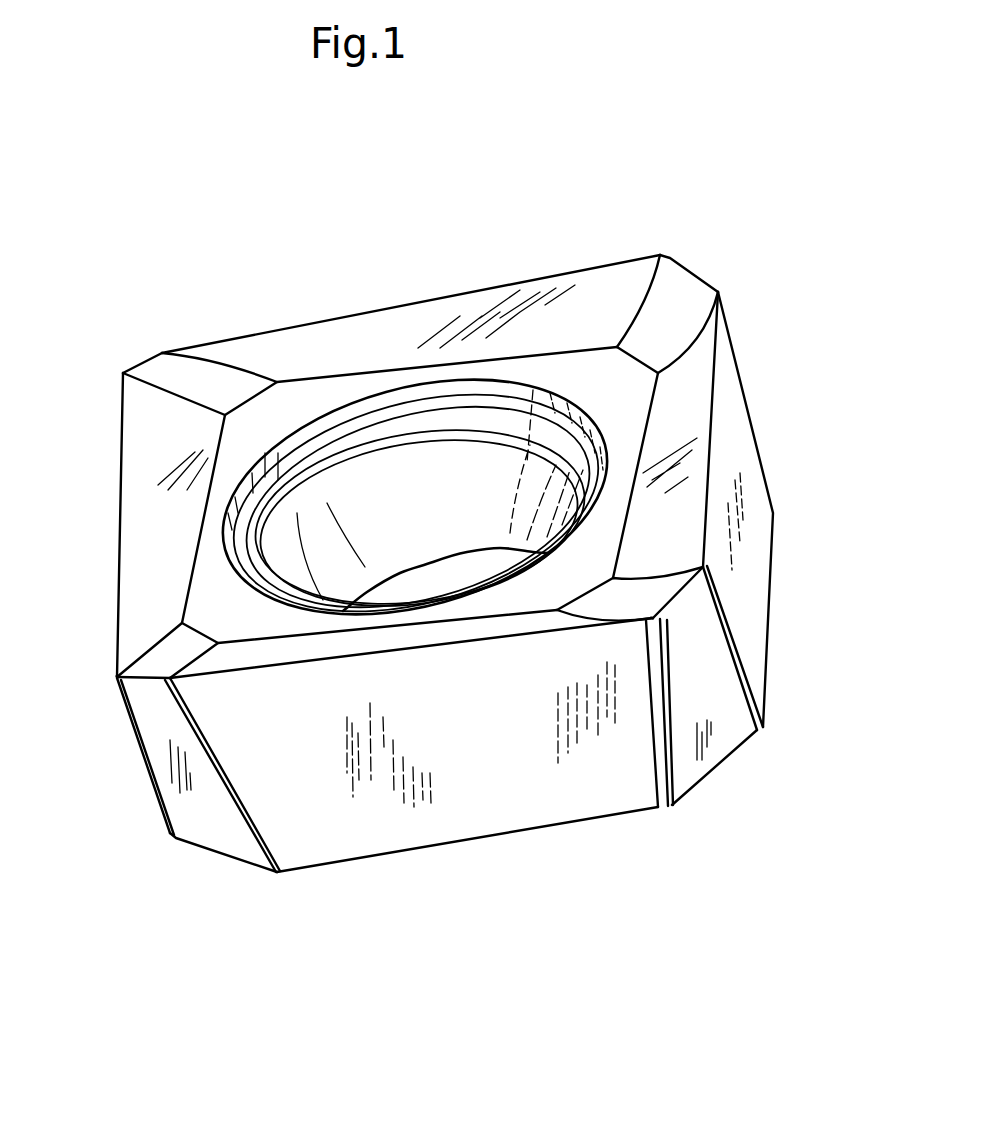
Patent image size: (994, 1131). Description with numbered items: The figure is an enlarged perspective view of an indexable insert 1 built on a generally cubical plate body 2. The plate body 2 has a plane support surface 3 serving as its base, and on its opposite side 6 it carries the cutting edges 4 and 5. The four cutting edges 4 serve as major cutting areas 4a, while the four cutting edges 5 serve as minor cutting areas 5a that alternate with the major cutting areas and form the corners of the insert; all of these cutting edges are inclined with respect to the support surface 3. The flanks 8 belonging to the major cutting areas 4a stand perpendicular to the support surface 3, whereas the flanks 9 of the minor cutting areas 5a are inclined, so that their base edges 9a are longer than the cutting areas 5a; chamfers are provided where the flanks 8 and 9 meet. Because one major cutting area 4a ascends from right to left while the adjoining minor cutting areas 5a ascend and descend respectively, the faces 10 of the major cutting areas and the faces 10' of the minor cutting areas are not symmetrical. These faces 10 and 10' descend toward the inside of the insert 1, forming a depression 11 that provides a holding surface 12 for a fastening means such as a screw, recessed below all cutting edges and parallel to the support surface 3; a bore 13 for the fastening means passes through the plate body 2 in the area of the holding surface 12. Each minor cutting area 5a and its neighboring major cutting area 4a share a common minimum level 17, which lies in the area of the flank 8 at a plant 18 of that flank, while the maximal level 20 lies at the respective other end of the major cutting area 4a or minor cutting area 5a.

The indexable insert 1 is at (206, 303).
The plate body 2 is at (251, 323).
The support surface 3 is at (487, 846).
The cutting edge 4 is at (440, 302).
The major cutting area 4a is at (496, 290).
The cutting edge 5 is at (123, 372).
The minor cutting area 5a is at (162, 352).
The side 6 is at (573, 372).
The flank 8 is at (150, 462).
The flank 9 is at (226, 835).
The base edge 9a is at (192, 846).
The face 10 is at (509, 466).
The face 10' is at (432, 466).
The depression 11 is at (612, 362).
The holding surface 12 is at (612, 520).
The bore 13 is at (362, 487).
The minimum level 17 is at (116, 675).
The plant of the flank 18 is at (585, 800).
The maximal level 20 is at (143, 752).